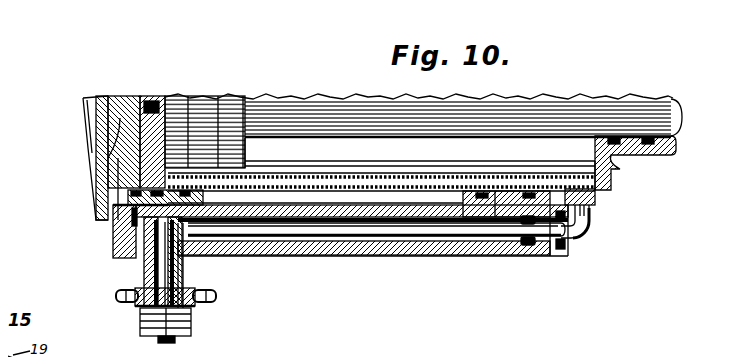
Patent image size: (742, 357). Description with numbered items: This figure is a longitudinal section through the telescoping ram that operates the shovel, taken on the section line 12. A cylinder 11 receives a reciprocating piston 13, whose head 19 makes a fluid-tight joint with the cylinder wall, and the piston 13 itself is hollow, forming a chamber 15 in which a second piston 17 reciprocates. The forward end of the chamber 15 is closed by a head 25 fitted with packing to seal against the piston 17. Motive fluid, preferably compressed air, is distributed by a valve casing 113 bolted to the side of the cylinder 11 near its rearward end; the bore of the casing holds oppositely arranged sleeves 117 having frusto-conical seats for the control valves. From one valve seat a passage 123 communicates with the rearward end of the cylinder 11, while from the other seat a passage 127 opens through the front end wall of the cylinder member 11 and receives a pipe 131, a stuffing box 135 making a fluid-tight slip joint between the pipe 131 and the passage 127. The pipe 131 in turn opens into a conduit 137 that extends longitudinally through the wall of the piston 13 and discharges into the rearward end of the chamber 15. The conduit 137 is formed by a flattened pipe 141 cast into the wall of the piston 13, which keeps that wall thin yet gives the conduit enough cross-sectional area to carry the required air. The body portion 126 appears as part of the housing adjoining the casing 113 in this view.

The cylinder 11 is at (440, 240).
The section line 12 is at (168, 86).
The piston 13 is at (443, 168).
The chamber 15 is at (343, 130).
The piston 17 is at (530, 113).
The head 19 is at (118, 162).
The head 25 is at (609, 151).
The valve casing 113 is at (143, 312).
The sleeves 117 is at (132, 268).
The passage 123 is at (108, 225).
The body 126 is at (206, 240).
The passage 127 is at (178, 257).
The pipe 131 is at (488, 218).
The stuffing box 135 is at (566, 242).
The conduit 137 is at (395, 172).
The flattened pipe 141 is at (281, 172).